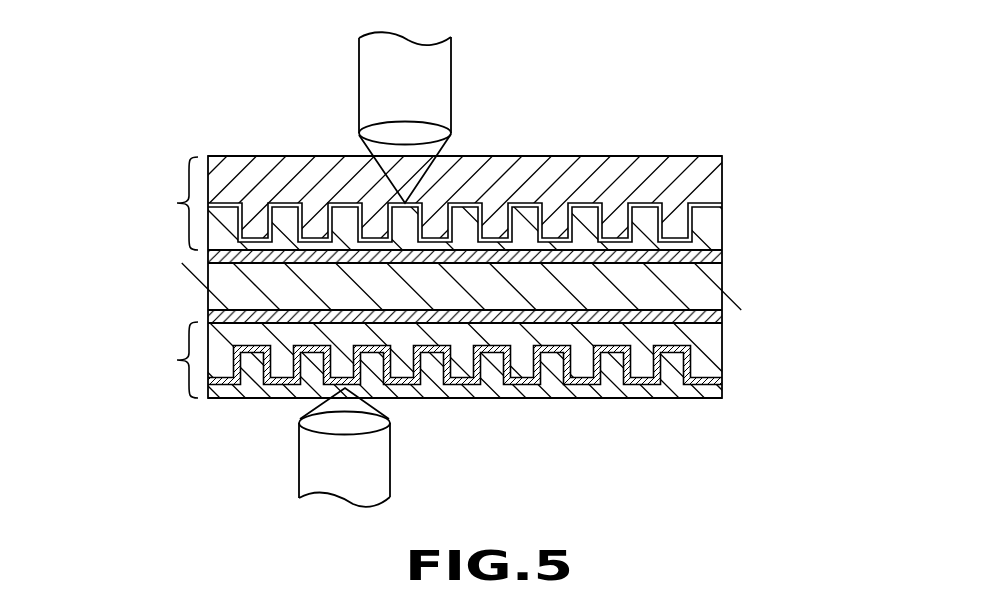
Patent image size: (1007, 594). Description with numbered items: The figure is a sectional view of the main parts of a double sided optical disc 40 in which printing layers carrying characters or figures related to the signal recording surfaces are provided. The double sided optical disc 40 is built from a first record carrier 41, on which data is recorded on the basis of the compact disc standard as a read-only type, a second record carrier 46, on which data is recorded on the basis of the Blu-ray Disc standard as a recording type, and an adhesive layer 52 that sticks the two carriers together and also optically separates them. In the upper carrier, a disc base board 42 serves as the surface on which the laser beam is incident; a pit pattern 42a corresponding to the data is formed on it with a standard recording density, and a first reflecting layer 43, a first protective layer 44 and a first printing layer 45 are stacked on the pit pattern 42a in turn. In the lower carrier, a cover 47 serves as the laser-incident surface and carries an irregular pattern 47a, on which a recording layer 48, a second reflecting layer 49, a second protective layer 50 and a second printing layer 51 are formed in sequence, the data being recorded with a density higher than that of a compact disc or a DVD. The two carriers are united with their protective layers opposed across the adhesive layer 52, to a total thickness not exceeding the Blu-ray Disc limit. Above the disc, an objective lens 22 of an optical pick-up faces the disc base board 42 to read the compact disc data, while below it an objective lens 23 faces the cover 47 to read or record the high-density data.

The double sided optical disc 40 is at (559, 95).
The first record carrier 41 is at (172, 222).
The second record carrier 46 is at (172, 378).
The disc base board 42 is at (708, 171).
The pit pattern 42a is at (634, 203).
The first reflecting layer 43 is at (708, 200).
The first protective layer 44 is at (708, 231).
The first printing layer 45 is at (708, 259).
The adhesive layer 52 is at (232, 288).
The second printing layer 51 is at (706, 303).
The second protective layer 50 is at (704, 321).
The second reflecting layer 49 is at (704, 346).
The recording layer 48 is at (705, 371).
The cover 47 is at (705, 398).
The irregular pattern 47a is at (653, 396).
The objective lens 22 is at (430, 132).
The objective lens 23 is at (368, 420).